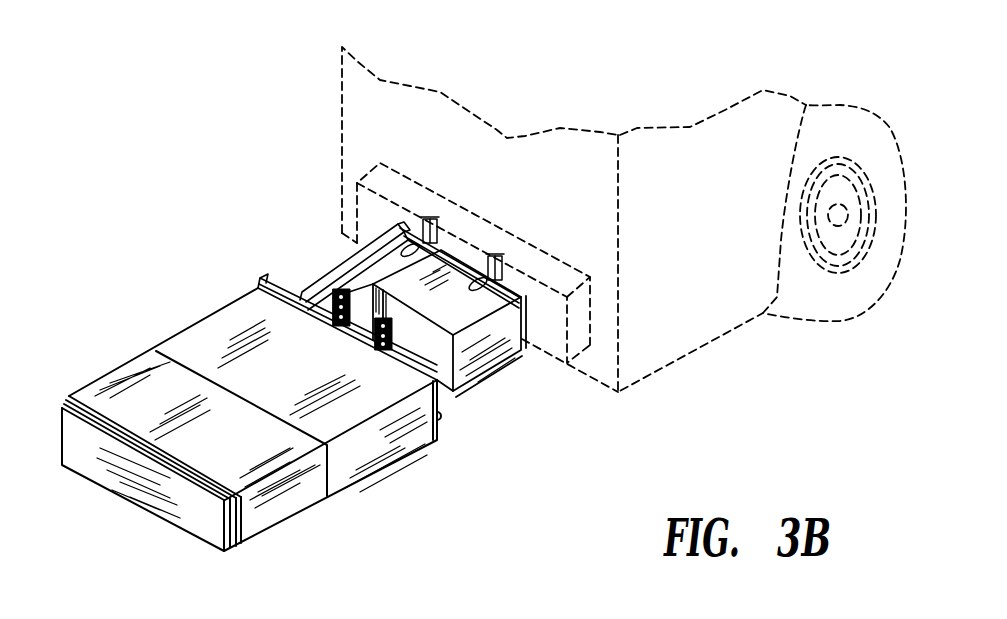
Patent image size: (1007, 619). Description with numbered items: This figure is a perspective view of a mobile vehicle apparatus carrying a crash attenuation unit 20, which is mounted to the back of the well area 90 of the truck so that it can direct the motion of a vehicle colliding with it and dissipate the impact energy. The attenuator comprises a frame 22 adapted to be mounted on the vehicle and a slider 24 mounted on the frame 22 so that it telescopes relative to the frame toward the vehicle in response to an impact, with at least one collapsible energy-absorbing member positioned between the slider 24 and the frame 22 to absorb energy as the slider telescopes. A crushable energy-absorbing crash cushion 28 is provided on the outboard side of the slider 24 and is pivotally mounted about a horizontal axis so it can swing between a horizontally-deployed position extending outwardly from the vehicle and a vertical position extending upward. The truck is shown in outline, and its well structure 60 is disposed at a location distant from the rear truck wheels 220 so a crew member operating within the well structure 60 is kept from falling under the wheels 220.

The crash attenuation unit 20 is at (492, 507).
The frame 22 is at (472, 388).
The slider 24 is at (320, 310).
The crushable energy-absorbing crash cushion 28 is at (327, 497).
The well structure 60 is at (707, 327).
The well area 90 is at (362, 110).
The rear truck wheels 220 is at (849, 312).